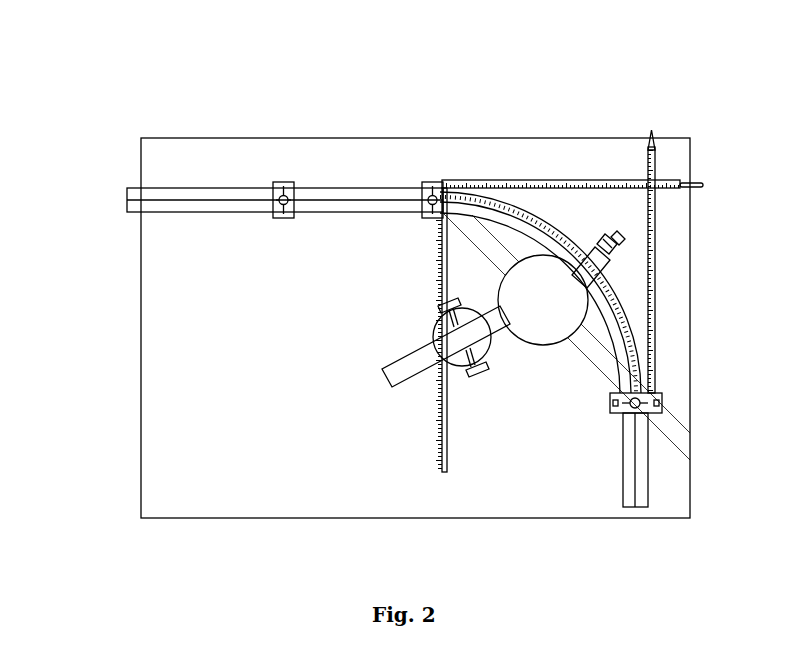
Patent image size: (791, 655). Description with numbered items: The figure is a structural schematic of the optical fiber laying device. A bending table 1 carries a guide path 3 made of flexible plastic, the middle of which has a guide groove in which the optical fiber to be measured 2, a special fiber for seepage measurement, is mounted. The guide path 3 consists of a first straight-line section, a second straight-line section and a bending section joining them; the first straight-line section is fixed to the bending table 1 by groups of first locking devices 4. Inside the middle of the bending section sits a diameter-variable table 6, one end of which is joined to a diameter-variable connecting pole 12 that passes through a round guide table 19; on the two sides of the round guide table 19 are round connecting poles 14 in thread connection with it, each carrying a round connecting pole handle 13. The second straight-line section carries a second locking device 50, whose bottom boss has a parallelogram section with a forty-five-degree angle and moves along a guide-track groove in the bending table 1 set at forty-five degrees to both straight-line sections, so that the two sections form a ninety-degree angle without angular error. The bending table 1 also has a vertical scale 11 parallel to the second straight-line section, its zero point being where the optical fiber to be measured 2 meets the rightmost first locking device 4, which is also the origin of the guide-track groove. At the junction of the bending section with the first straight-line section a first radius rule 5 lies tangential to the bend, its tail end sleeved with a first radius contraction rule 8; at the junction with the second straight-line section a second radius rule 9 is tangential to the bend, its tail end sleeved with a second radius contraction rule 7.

The bending table 1 is at (245, 323).
The optical fiber to be measured 2 is at (200, 200).
The guide path 3 is at (242, 195).
The first locking device 4 is at (287, 183).
The first radius rule 5 is at (557, 180).
The diameter-variable table 6 is at (543, 298).
The second radius contraction rule 7 is at (655, 142).
The first radius contraction rule 8 is at (692, 192).
The second radius rule 9 is at (657, 272).
The vertical scale 11 is at (442, 427).
The diameter-variable connecting pole 12 is at (425, 360).
The round connecting pole handle 13 is at (478, 380).
The round connecting pole 14 is at (482, 364).
The round guide table 19 is at (457, 338).
The second locking device 50 is at (623, 397).